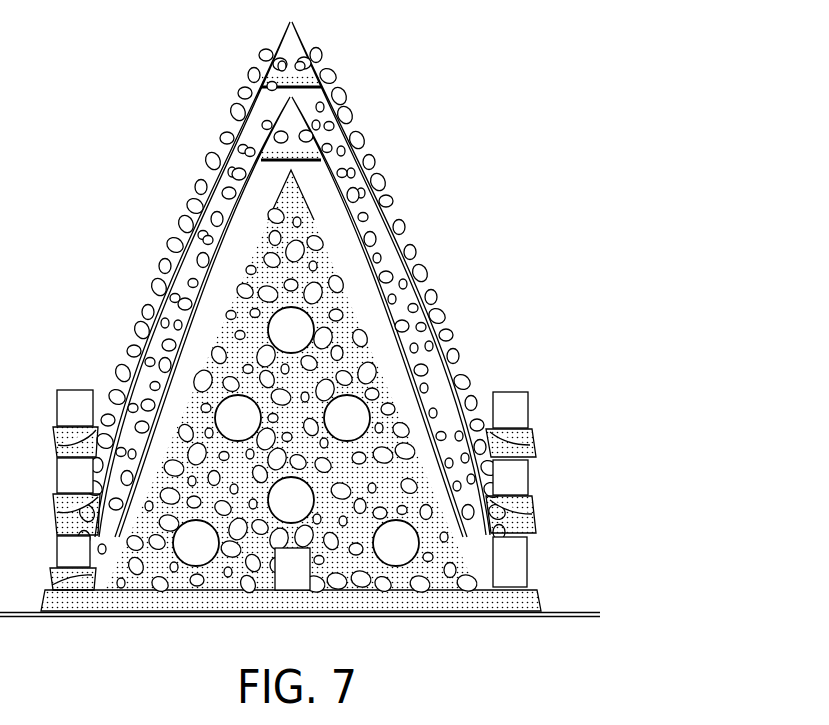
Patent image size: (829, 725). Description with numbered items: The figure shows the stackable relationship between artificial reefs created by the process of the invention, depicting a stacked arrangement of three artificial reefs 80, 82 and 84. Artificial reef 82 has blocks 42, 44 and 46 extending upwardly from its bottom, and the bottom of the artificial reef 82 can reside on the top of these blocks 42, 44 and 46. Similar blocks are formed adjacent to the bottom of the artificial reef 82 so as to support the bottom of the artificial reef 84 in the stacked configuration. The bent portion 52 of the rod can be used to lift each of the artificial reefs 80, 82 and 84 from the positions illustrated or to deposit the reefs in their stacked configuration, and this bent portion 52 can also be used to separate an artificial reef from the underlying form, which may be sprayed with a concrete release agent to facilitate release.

The block 42 is at (85, 563).
The block 44 is at (305, 580).
The block 46 is at (521, 563).
The bent portion 52 is at (300, 181).
The artificial reef 80 is at (238, 215).
The artificial reef 82 is at (332, 135).
The artificial reef 84 is at (330, 72).